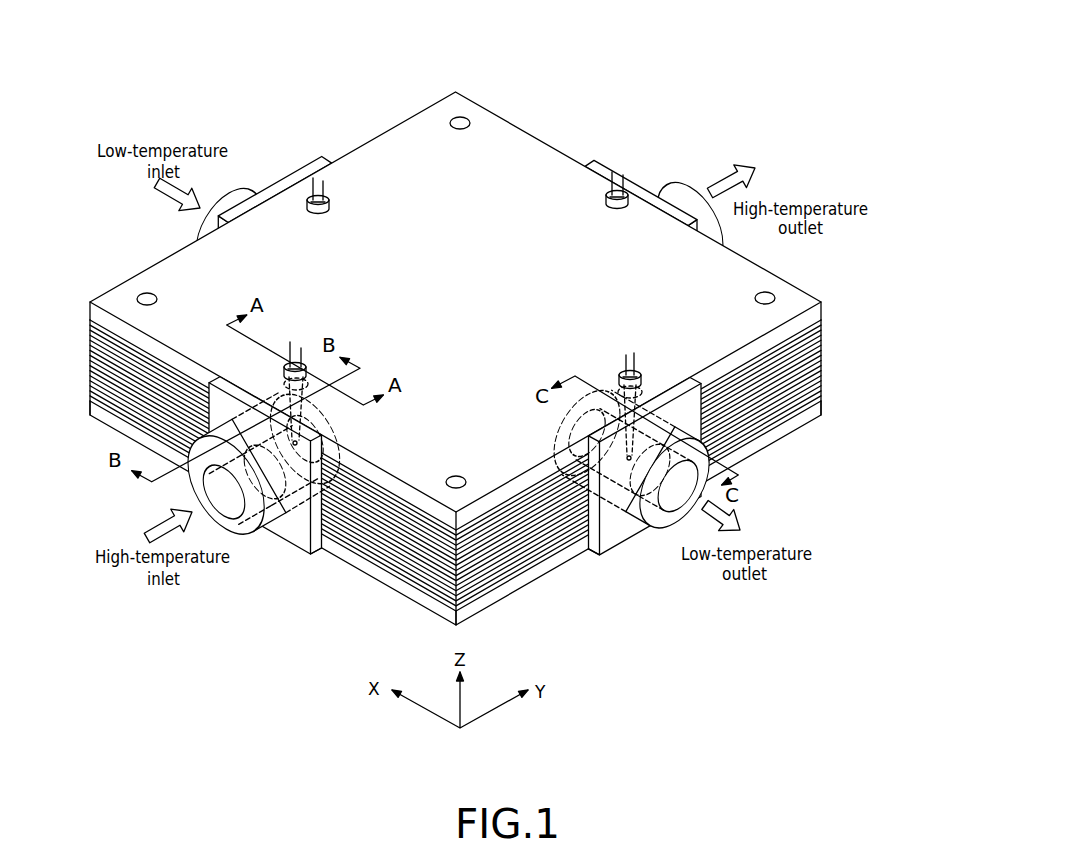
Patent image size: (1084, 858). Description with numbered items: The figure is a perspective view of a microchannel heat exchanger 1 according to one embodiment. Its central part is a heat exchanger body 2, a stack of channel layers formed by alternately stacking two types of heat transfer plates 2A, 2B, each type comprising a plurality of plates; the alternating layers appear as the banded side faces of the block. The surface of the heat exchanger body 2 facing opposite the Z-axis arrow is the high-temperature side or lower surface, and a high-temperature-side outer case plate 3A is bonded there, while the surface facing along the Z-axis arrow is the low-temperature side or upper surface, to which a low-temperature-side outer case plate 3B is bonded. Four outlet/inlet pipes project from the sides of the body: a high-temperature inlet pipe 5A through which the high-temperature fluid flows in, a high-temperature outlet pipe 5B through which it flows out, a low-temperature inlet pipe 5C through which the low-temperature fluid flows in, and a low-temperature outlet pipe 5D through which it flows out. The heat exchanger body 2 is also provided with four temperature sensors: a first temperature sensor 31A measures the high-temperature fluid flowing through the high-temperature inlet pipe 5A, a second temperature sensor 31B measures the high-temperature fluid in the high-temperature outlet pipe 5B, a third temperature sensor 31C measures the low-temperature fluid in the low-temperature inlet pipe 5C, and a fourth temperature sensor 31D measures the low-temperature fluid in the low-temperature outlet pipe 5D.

The microchannel heat exchanger 1 is at (497, 315).
The heat exchanger body 2 is at (497, 464).
The heat transfer plate 2A is at (822, 328).
The heat transfer plate 2B is at (822, 323).
The high-temperature-side outer case plate 3A is at (822, 413).
The low-temperature-side outer case plate 3B is at (822, 303).
The high-temperature inlet pipe 5A is at (242, 527).
The high-temperature outlet pipe 5B is at (675, 186).
The low-temperature inlet pipe 5C is at (250, 186).
The low-temperature outlet pipe 5D is at (662, 529).
The first temperature sensor 31A is at (295, 355).
The second temperature sensor 31B is at (616, 207).
The third temperature sensor 31C is at (326, 198).
The fourth temperature sensor 31D is at (622, 356).